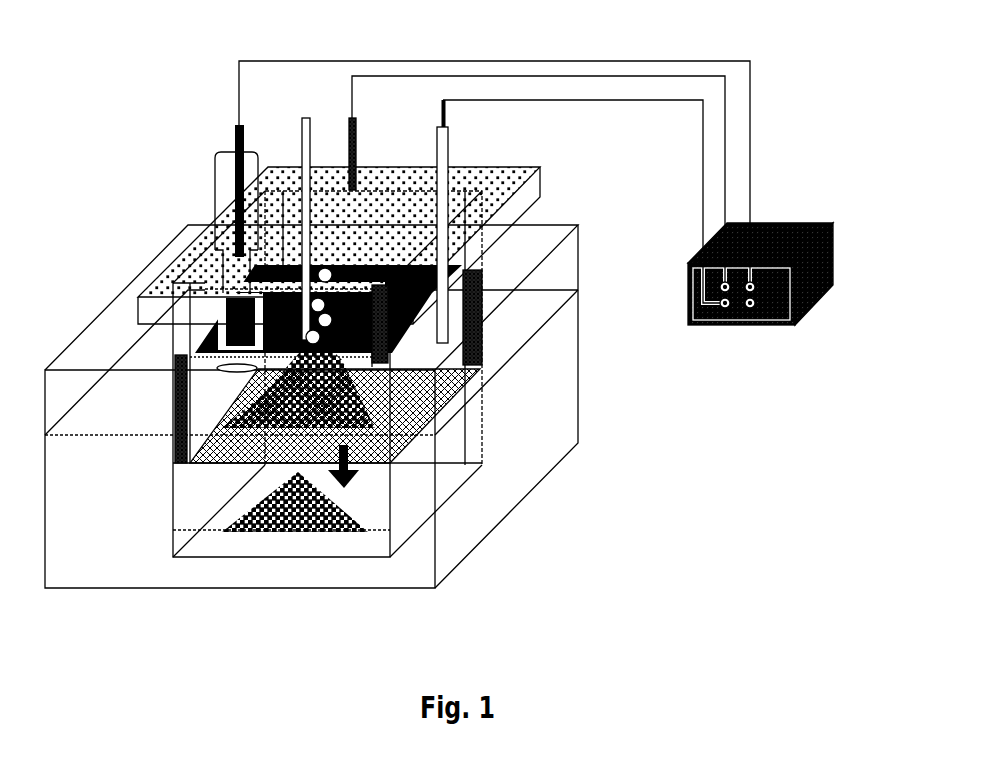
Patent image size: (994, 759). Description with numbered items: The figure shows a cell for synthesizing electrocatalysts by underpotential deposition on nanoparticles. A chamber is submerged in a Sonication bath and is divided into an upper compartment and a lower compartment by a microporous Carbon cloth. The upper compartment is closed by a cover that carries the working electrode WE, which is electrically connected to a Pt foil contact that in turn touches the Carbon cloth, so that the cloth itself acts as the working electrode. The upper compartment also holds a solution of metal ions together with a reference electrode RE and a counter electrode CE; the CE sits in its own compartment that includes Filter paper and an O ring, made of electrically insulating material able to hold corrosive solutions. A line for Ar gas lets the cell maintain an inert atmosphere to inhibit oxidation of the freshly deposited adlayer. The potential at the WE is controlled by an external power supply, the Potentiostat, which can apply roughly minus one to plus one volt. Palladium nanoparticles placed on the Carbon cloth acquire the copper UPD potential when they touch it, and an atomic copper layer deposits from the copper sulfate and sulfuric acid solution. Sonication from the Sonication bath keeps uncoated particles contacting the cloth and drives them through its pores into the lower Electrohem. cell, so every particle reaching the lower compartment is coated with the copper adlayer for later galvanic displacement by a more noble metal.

The counter electrode CE is at (226, 145).
The working electrode WE is at (360, 143).
The reference electrode RE is at (456, 138).
The inert gas inlet Ar gas is at (305, 114).
The element Pt foil contact is at (478, 248).
The potentiostat Potentiostat is at (815, 214).
The sonication bath Sonication bath is at (583, 352).
The carbon cloth Carbon cloth is at (438, 415).
The electrochemical cell Electrohem. cell is at (487, 455).
The filter paper Filter paper is at (237, 382).
The o-ring O ring is at (203, 352).